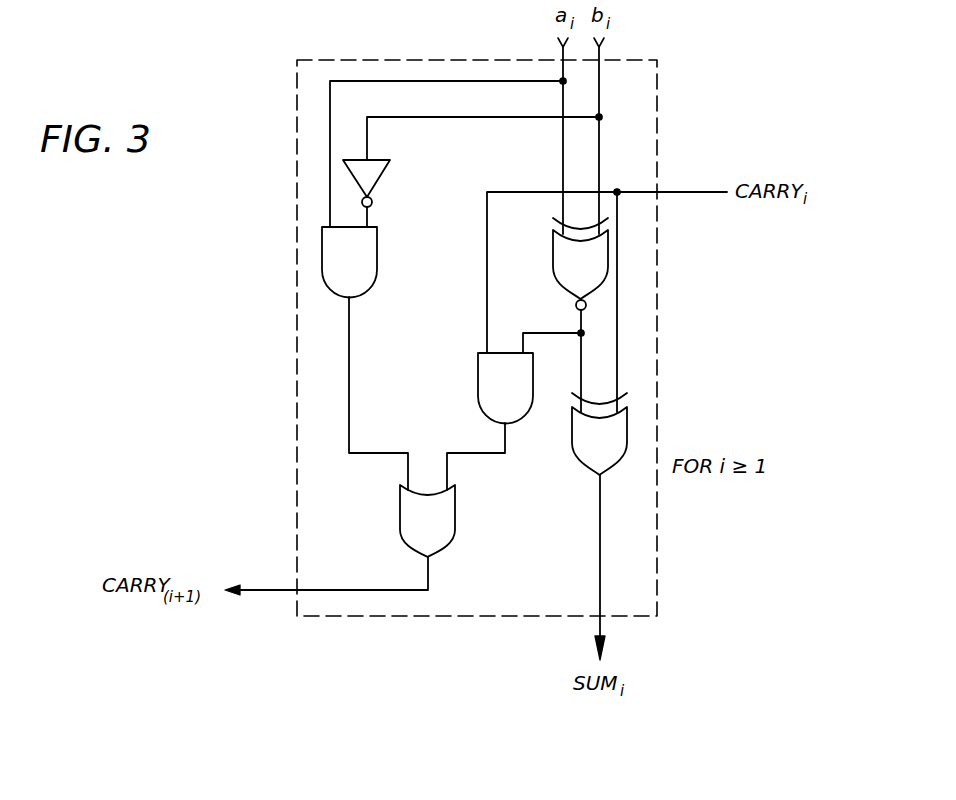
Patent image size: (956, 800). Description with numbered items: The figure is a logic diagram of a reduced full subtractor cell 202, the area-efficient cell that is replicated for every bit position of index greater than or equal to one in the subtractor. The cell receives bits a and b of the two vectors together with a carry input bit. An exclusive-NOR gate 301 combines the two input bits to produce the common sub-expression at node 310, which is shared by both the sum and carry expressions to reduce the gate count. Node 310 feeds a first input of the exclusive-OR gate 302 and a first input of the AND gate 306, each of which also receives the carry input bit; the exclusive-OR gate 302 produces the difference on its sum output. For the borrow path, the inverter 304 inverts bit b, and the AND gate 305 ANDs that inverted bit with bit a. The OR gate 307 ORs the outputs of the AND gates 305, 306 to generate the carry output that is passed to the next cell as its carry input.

The reduced full subtractor cell 202 is at (657, 100).
The exclusive-NOR gate 301 is at (553, 262).
The exclusive-OR gate 302 is at (577, 460).
The inverter 304 is at (381, 178).
The AND gate 305 is at (377, 248).
The AND gate 306 is at (478, 395).
The OR gate 307 is at (400, 522).
The node 310 is at (537, 333).